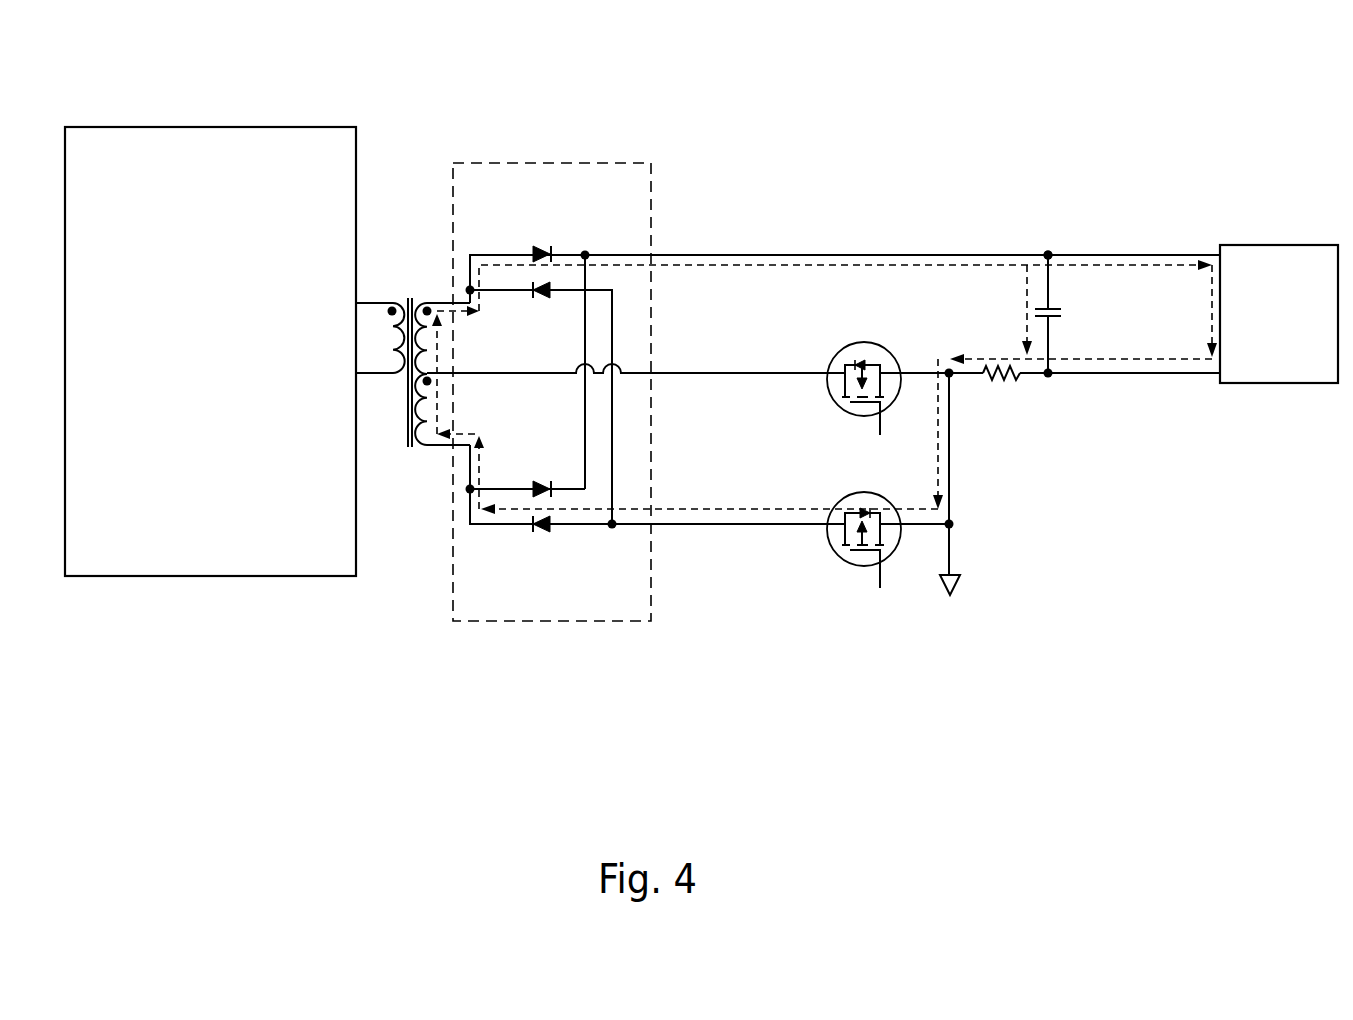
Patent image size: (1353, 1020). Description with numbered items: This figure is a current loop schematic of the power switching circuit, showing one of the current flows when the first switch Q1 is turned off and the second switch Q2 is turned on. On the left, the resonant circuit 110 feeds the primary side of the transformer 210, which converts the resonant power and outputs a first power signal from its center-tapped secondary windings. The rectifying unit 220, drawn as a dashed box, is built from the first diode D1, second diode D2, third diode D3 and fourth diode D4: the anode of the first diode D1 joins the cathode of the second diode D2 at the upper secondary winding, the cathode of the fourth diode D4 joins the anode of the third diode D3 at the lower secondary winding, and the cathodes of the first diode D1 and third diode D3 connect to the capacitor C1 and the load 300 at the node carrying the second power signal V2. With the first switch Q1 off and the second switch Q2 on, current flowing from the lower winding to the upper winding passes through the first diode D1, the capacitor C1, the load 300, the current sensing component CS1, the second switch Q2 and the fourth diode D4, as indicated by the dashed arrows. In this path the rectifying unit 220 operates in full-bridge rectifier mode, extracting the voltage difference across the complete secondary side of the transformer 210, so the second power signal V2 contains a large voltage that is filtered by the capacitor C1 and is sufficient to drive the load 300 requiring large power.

The resonant circuit 110 is at (210, 127).
The transformer 210 is at (405, 297).
The rectifying unit 220 is at (528, 163).
The load 300 is at (1253, 243).
The first diode D1 is at (543, 245).
The second diode D2 is at (540, 303).
The third diode D3 is at (543, 482).
The fourth diode D4 is at (540, 538).
The first switch Q1 is at (887, 340).
The second switch Q2 is at (890, 556).
The capacitor C1 is at (1062, 313).
The current sensing component CS1 is at (1005, 387).
The second power signal V2 is at (1048, 250).